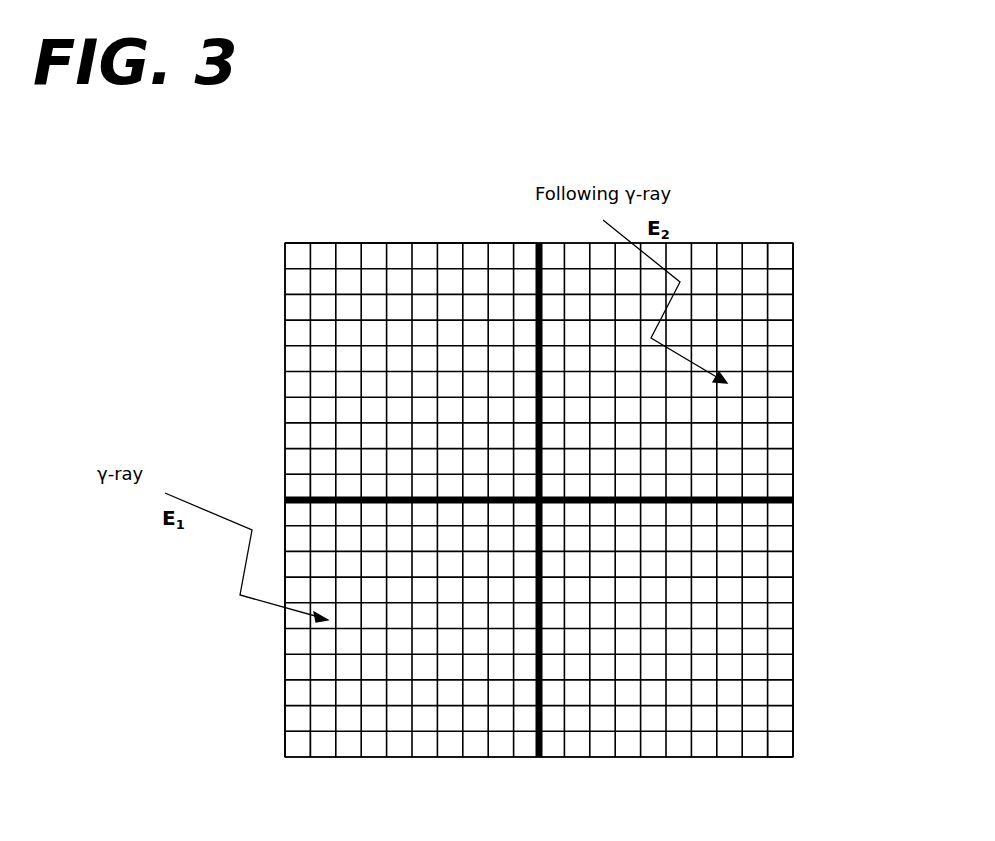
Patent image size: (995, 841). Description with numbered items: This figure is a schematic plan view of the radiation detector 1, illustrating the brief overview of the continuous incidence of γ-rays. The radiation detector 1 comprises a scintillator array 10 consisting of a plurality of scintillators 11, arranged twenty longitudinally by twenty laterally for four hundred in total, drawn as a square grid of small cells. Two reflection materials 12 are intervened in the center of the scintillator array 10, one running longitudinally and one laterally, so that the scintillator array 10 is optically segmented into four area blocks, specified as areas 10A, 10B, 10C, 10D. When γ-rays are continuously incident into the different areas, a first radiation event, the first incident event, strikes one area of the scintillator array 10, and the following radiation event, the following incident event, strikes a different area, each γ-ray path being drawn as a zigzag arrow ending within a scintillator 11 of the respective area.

The radiation detector 1 is at (69, 210).
The scintillator array 10 is at (722, 230).
The area 10A is at (795, 230).
The area 10B is at (284, 242).
The area 10C is at (796, 641).
The area 10D is at (284, 641).
The scintillator 11 is at (788, 260).
The reflection material 12 is at (536, 265).